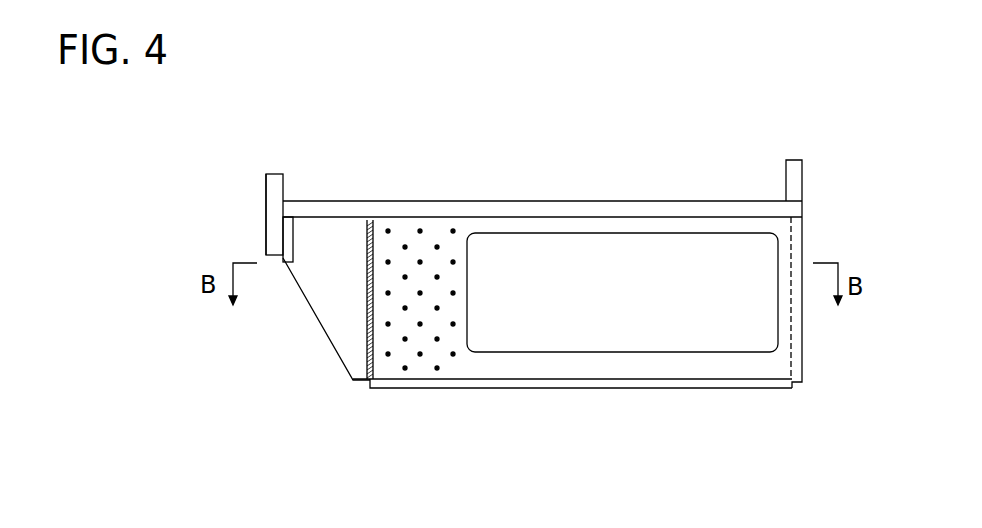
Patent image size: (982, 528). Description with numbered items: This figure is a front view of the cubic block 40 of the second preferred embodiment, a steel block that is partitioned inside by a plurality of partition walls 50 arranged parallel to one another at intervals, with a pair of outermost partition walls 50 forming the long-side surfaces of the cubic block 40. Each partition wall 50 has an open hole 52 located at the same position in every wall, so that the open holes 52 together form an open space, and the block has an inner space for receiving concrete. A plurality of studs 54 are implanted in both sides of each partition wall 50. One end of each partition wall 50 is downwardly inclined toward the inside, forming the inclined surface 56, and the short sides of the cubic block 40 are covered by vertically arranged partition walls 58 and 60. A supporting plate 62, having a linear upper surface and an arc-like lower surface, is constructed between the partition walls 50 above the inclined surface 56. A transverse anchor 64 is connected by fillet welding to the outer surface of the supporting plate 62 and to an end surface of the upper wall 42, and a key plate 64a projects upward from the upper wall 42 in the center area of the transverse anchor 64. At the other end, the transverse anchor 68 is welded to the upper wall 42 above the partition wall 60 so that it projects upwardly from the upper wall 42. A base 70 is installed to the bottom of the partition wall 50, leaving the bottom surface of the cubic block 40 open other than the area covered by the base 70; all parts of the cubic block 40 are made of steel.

The cubic block 40 is at (585, 196).
The upper wall 42 is at (690, 200).
The partition wall 50 is at (497, 372).
The open hole 52 is at (532, 234).
The stud 54 is at (420, 230).
The inclined surface 56 is at (315, 320).
The partition wall 58 is at (368, 256).
The partition wall 60 is at (803, 320).
The supporting plate 62 is at (293, 237).
The transverse anchor 64 is at (266, 227).
The key plate 64a is at (268, 172).
The transverse anchor 68 is at (800, 170).
The base 70 is at (700, 390).